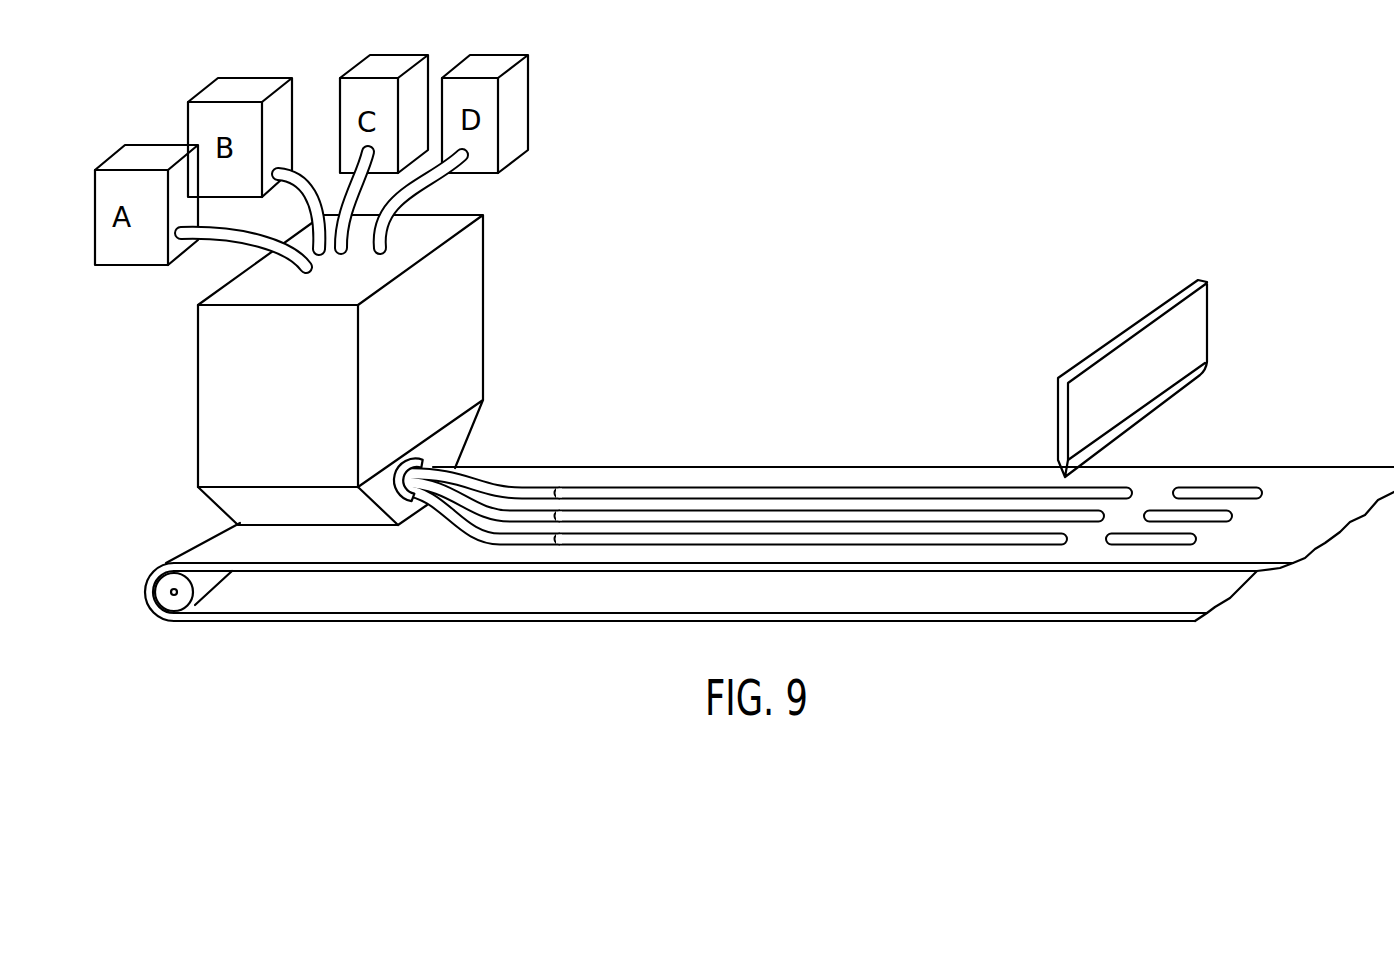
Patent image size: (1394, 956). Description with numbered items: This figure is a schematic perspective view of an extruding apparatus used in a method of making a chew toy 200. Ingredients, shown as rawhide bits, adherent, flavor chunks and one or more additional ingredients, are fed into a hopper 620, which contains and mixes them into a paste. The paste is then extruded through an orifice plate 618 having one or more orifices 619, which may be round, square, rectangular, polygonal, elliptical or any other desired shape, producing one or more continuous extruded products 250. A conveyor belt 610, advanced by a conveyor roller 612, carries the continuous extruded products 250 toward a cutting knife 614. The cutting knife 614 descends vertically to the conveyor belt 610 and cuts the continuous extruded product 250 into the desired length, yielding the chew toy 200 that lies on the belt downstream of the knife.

The hopper 620 is at (472, 326).
The orifice plate 618 is at (433, 460).
The orifices 619 is at (433, 463).
The continuous extruded product 250 is at (673, 540).
The cutting knife 614 is at (1205, 322).
The chew toy 200 is at (1212, 490).
The conveyor roller 612 is at (168, 604).
The conveyor belt 610 is at (433, 567).